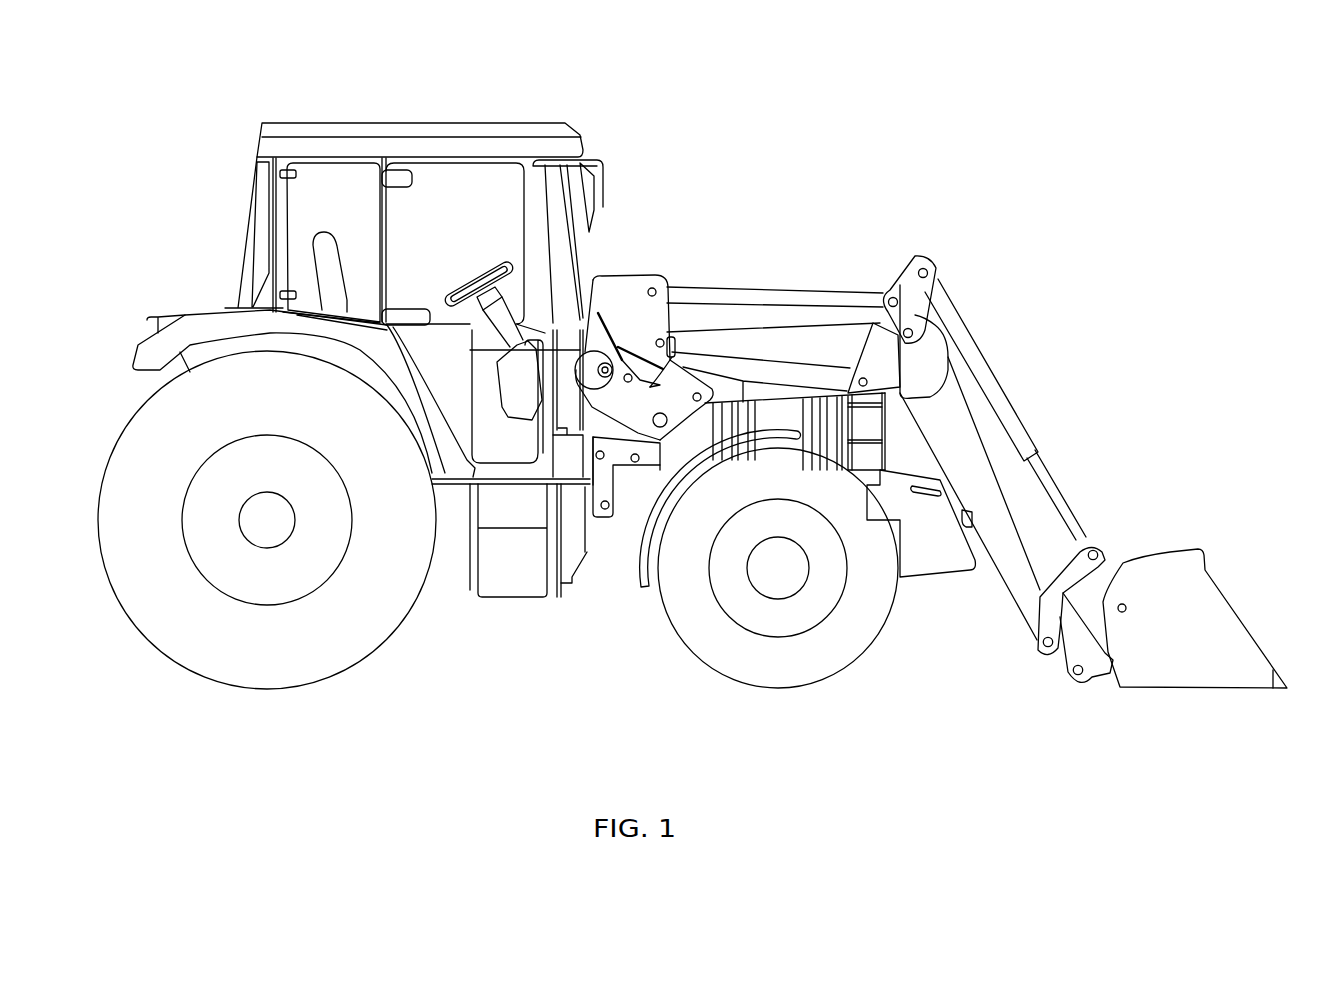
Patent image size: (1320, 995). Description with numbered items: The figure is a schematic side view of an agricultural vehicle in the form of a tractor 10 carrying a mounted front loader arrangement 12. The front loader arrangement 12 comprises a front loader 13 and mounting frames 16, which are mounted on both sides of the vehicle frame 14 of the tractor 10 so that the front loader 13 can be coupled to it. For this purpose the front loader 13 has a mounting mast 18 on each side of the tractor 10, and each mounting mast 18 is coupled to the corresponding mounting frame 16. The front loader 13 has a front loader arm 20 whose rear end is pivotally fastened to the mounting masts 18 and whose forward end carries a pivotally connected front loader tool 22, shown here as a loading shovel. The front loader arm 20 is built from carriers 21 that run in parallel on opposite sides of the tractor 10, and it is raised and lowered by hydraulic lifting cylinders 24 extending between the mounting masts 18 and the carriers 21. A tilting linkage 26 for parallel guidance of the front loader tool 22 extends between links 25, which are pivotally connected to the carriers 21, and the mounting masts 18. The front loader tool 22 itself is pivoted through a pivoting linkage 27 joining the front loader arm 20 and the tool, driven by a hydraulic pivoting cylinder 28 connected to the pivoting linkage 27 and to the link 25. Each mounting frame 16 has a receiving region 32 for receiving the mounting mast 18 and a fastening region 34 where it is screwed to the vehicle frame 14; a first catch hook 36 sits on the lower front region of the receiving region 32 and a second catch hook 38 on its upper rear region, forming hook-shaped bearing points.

The tractor 10 is at (484, 647).
The front loader arrangement 12 is at (953, 158).
The front loader 13 is at (958, 613).
The vehicle frame 14 is at (624, 535).
The mounting frame 16 is at (608, 462).
The mounting mast 18 is at (628, 320).
The front loader arm 20 is at (793, 345).
The carrier 21 is at (965, 457).
The front loader tool 22 is at (1183, 618).
The hydraulic lifting cylinder 24 is at (768, 392).
The link 25 is at (912, 296).
The tilting linkage 26 is at (832, 297).
The pivoting linkage 27 is at (1072, 570).
The hydraulic pivoting cylinder 28 is at (1060, 498).
The receiving region 32 is at (612, 422).
The fastening region 34 is at (619, 468).
The first catch hook 36 is at (622, 422).
The second catch hook 38 is at (592, 365).